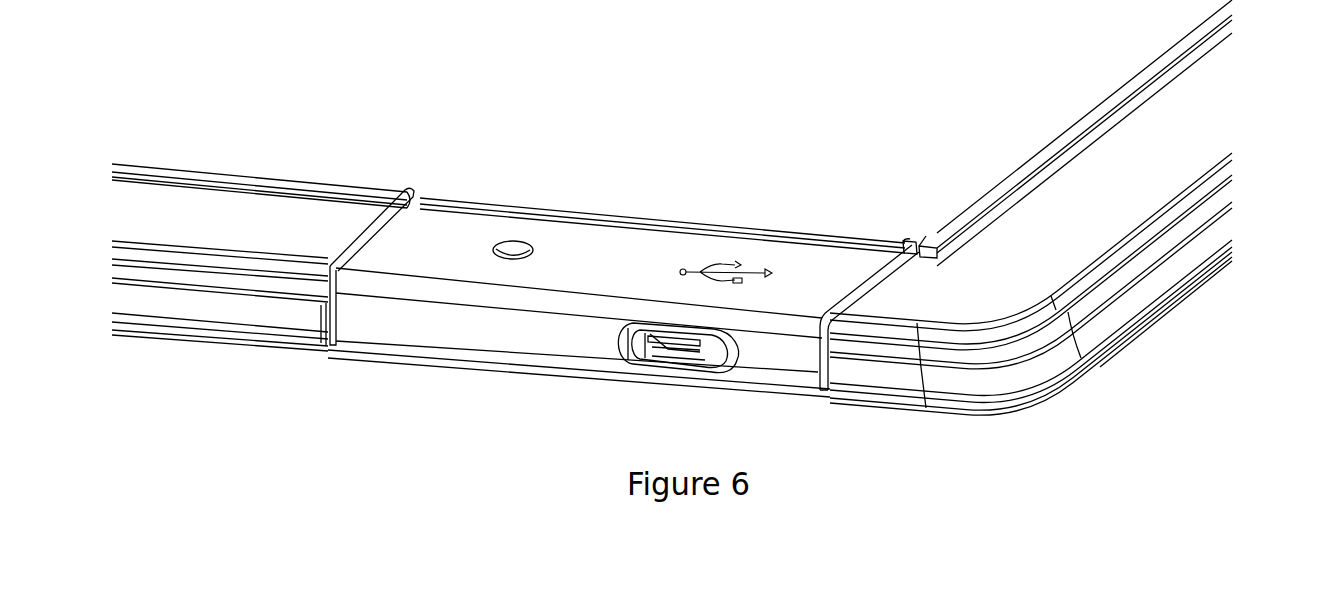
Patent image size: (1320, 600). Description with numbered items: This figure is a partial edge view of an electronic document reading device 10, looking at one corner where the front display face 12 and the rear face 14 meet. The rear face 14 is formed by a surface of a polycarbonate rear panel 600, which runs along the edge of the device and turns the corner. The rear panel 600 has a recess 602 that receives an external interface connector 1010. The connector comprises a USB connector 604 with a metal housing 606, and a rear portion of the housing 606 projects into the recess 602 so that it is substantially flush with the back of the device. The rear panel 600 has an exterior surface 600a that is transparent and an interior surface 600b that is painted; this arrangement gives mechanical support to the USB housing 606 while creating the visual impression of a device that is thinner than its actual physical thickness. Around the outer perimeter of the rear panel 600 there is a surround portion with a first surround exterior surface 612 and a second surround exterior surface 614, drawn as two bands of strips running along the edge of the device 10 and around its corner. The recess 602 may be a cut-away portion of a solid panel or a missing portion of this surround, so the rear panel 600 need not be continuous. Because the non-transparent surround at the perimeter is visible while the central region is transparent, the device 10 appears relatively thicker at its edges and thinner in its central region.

The electronic document reading device 10 is at (181, 444).
The front display face 12 is at (1198, 292).
The rear face 14 is at (1178, 165).
The polycarbonate rear panel 600 is at (646, 112).
The exterior surface 600a is at (910, 249).
The interior surface 600b is at (921, 241).
The recess 602 is at (732, 202).
The USB connector 604 is at (697, 336).
The metal housing 606 is at (733, 356).
The external interface connector 1010 is at (712, 384).
The first surround exterior surface 612 is at (92, 172).
The second surround exterior surface 614 is at (72, 249).